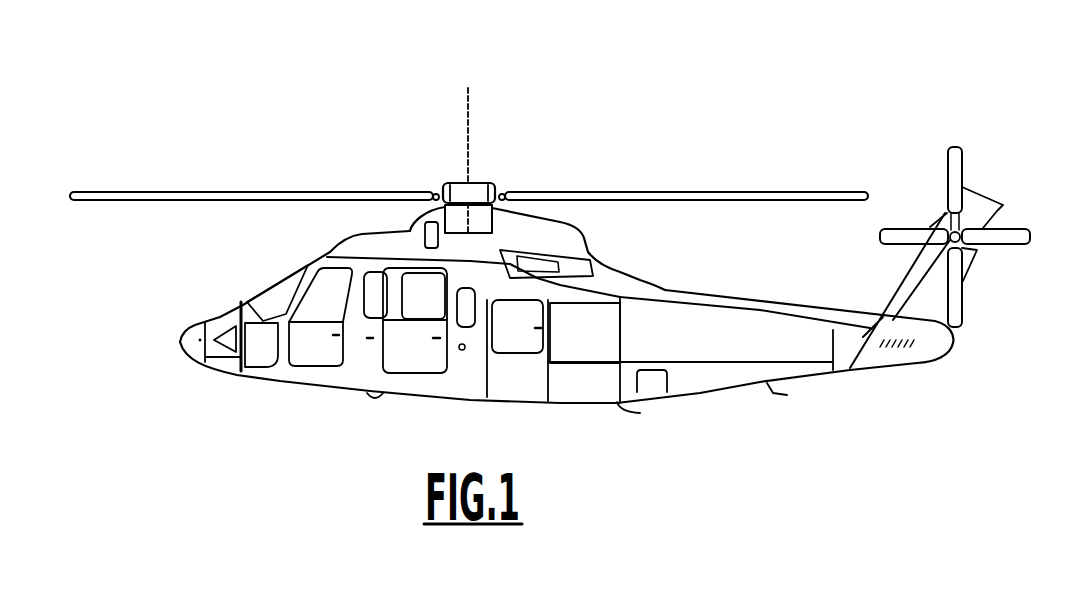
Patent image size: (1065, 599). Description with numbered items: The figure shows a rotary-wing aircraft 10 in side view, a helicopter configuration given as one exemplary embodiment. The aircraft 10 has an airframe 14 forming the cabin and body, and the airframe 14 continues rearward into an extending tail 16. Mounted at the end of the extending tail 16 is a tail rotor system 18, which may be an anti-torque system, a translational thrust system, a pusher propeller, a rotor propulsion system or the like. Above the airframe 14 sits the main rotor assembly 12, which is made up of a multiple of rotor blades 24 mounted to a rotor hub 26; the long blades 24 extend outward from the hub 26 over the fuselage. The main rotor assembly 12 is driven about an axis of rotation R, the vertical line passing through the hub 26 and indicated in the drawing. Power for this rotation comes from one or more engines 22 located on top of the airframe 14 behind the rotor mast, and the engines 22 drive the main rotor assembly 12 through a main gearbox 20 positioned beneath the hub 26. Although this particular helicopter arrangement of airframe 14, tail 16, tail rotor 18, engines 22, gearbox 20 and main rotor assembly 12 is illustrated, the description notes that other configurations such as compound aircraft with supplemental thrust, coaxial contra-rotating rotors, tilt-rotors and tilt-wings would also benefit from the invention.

The rotary-wing aircraft 10 is at (550, 99).
The main rotor assembly 12 is at (462, 177).
The airframe 14 is at (297, 372).
The extending tail 16 is at (797, 372).
The tail rotor system 18 is at (969, 165).
The main gearbox 20 is at (442, 243).
The engines 22 is at (581, 241).
The rotor blades 24 is at (608, 191).
The rotor hub 26 is at (477, 183).
The axis of rotation R is at (468, 110).